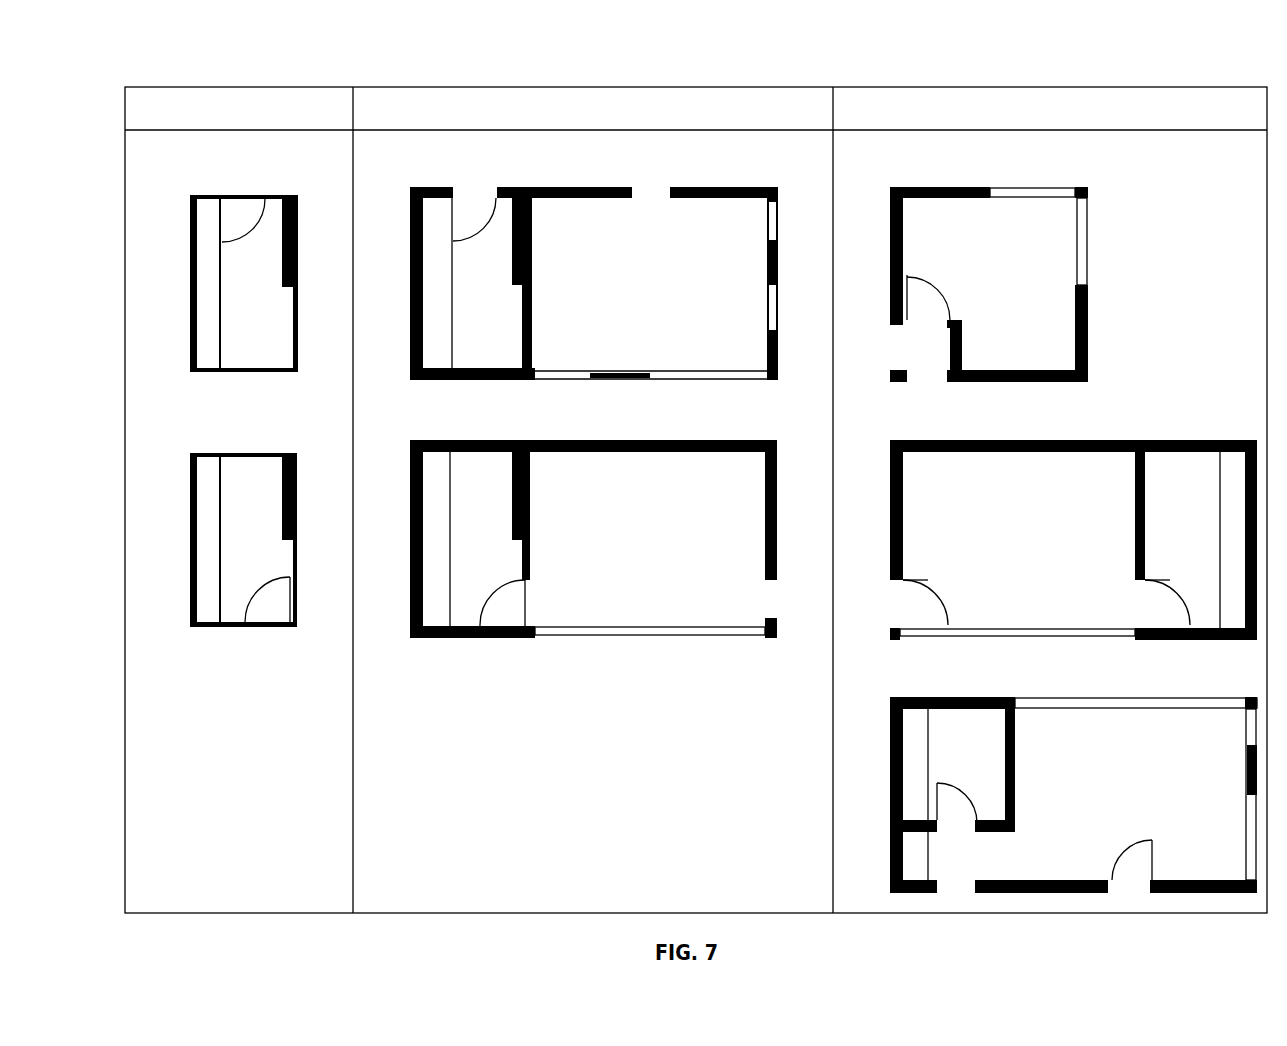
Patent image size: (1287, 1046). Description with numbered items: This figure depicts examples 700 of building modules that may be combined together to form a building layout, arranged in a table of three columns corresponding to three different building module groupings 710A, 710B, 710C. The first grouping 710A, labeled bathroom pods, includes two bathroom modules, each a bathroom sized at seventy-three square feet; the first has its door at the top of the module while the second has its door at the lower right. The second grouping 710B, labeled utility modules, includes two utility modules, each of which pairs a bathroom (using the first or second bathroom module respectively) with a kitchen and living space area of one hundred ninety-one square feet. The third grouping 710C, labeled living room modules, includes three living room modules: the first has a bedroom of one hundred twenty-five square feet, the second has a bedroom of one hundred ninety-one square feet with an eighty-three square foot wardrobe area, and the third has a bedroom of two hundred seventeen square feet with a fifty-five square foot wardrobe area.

The examples of building modules 700 is at (131, 87).
The first grouping 710A is at (257, 171).
The second grouping 710B is at (628, 171).
The third grouping 710C is at (1065, 171).